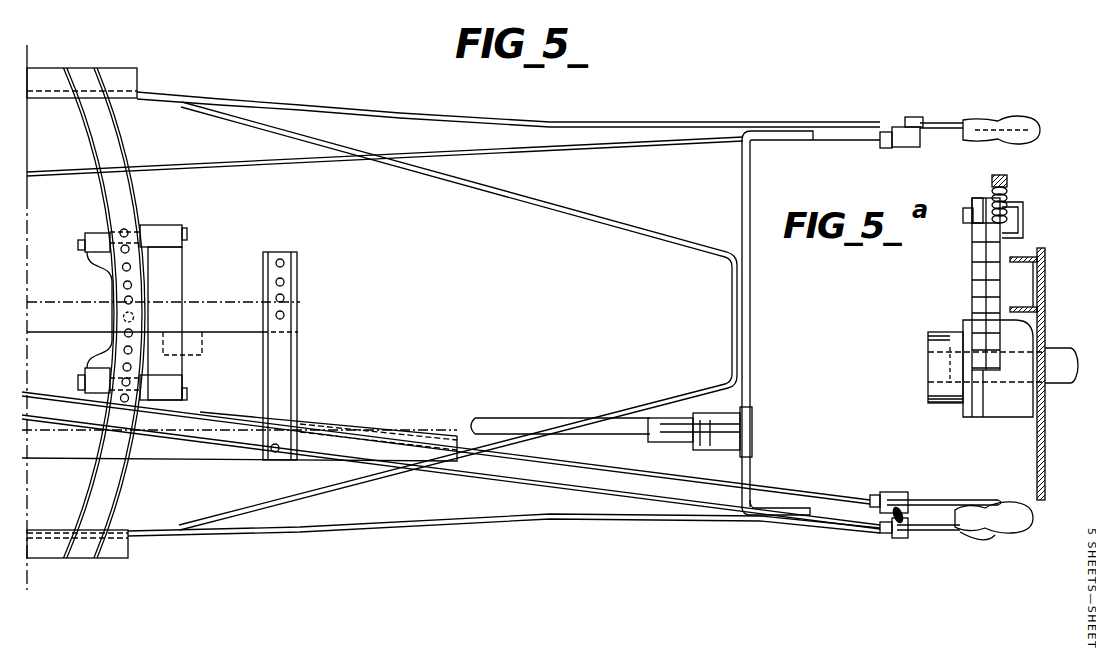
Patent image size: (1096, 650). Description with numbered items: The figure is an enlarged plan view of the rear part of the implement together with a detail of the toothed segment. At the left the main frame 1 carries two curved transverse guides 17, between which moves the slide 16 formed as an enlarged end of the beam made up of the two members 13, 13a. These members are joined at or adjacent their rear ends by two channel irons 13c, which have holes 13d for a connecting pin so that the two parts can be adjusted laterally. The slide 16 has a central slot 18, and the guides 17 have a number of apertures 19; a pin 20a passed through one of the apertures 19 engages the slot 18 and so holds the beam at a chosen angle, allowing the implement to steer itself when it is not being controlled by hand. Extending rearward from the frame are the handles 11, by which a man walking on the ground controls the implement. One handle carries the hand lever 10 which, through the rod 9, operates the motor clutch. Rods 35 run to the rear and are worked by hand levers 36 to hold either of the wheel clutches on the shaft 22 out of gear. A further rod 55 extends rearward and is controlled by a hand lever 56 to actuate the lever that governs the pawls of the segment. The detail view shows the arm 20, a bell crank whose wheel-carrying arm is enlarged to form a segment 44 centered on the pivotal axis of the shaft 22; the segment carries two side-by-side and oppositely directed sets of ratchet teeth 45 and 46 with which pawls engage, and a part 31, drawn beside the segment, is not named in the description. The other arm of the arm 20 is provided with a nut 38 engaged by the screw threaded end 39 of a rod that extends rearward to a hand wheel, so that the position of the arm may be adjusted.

In FIG. 5, the main frame 1 is at (50, 76).
In FIG. 5a, the main frame 1 is at (1030, 257).
In FIG. 5, the rod 9 is at (183, 168).
In FIG. 5, the hand lever 10 is at (948, 134).
In FIG. 5, the handles 11 is at (640, 122).
In FIG. 5, the beam member 13 is at (202, 313).
In FIG. 5, the beam member 13a is at (387, 453).
In FIG. 5, the channel irons 13c is at (282, 373).
In FIG. 5, the holes 13d is at (284, 283).
In FIG. 5, the slide 16 is at (172, 279).
In FIG. 5, the curved transverse guides 17 is at (110, 143).
In FIG. 5, the slot 18 is at (128, 313).
In FIG. 5, the apertures 19 is at (123, 365).
In FIG. 5a, the arm 20 is at (977, 197).
In FIG. 5, the pin 20a is at (150, 330).
In FIG. 5a, the shaft 22 is at (1063, 358).
In FIG. 5a, the block 31 is at (940, 340).
In FIG. 5, the rods 35 is at (442, 473).
In FIG. 5, the hand levers 36 is at (928, 500).
In FIG. 5a, the nut 38 is at (1032, 220).
In FIG. 5a, the screw threaded end 39 is at (1003, 188).
In FIG. 5a, the segment 44 is at (983, 371).
In FIG. 5a, the ratchet teeth 45 is at (982, 249).
In FIG. 5a, the ratchet teeth 46 is at (995, 293).
In FIG. 5, the rod 55 is at (487, 425).
In FIG. 5, the hand lever 56 is at (738, 431).